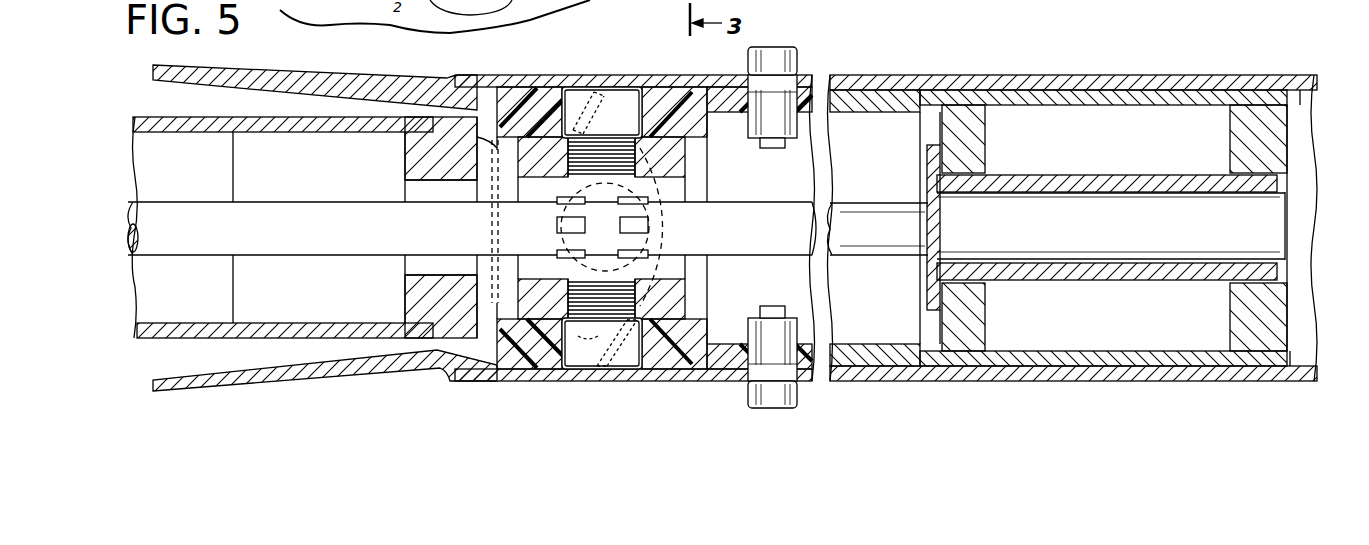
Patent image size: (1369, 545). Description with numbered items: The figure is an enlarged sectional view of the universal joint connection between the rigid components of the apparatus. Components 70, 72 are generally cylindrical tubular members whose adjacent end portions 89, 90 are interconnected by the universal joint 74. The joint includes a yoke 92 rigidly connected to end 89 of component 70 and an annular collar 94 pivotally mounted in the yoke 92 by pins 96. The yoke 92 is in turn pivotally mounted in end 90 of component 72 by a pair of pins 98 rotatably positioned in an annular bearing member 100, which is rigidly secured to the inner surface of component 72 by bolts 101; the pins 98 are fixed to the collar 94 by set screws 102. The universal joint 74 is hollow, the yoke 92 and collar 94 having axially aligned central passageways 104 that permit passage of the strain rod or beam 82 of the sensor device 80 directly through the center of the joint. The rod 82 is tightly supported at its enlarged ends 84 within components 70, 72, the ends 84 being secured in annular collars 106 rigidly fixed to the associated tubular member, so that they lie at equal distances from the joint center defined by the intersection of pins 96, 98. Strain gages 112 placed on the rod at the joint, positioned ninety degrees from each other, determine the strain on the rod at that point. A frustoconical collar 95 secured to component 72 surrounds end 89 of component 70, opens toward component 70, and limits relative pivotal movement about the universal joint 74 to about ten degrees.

The component 70 is at (208, 95).
The component 72 is at (1004, 86).
The universal joint 74 is at (540, 98).
The sensor device 80 is at (584, 66).
The strain beam or rod 82 is at (786, 212).
The ends of rod 84 is at (1268, 224).
The end portion of component 70 89 is at (140, 117).
The end portion of component 72 90 is at (528, 52).
The yoke 92 is at (405, 166).
The annular collar 94 is at (690, 152).
The frustoconical collar 95 is at (318, 50).
The pins 96 is at (680, 224).
The pins 98 is at (632, 92).
The annular bearing member 100 is at (680, 92).
The bolts 101 is at (798, 53).
The set screws 102 is at (590, 127).
The central passageways 104 is at (463, 179).
The annular collars 106 is at (992, 138).
The strain gages 112 is at (560, 250).